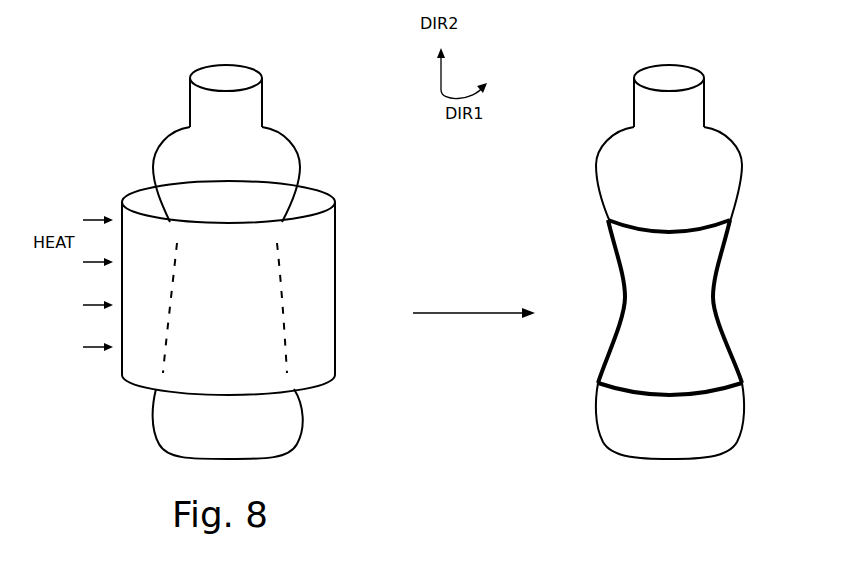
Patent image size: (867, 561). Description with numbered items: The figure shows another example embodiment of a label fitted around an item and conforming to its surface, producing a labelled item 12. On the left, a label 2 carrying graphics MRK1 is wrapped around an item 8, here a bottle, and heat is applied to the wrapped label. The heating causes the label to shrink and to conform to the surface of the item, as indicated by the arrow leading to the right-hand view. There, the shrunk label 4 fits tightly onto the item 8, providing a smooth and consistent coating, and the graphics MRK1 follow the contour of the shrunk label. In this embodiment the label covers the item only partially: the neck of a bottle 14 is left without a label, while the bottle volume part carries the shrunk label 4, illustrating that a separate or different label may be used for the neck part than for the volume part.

The label 2 is at (122, 370).
The shrunk label 4 is at (617, 373).
The item 8 is at (300, 148).
The labelled item 12 is at (645, 50).
The neck of a bottle 14 is at (262, 105).
The graphics MRK1 is at (303, 302).